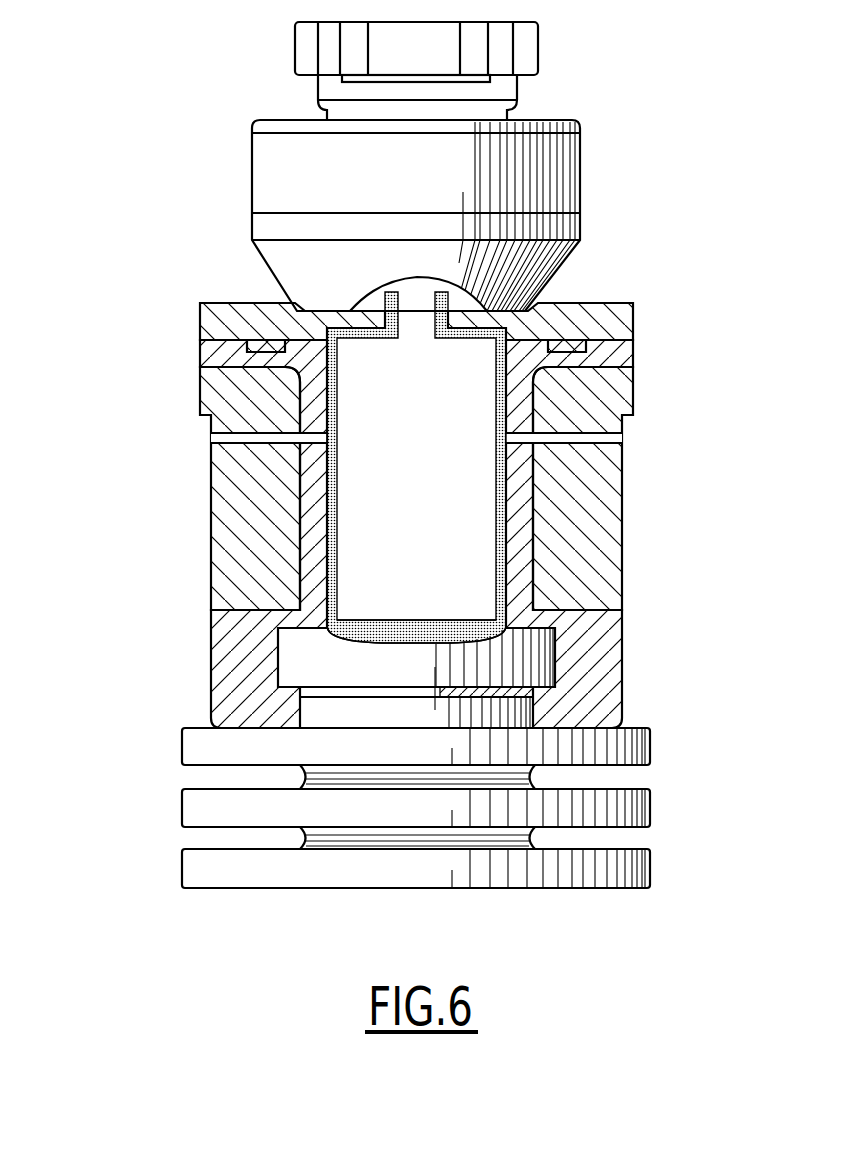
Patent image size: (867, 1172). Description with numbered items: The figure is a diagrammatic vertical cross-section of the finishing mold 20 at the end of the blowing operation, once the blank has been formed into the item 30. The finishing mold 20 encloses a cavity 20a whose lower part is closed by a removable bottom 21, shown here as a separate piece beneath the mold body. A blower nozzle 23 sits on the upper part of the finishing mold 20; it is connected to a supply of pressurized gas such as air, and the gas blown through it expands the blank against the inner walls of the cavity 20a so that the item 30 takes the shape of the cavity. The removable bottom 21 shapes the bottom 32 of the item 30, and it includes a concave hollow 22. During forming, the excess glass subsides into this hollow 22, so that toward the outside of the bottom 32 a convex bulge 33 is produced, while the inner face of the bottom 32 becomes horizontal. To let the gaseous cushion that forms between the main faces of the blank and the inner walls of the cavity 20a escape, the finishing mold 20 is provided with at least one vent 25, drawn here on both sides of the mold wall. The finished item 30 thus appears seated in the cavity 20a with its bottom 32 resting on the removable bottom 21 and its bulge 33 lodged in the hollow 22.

The finishing mold 20 is at (632, 517).
The cavity 20a is at (327, 570).
The removable bottom 21 is at (598, 747).
The concave hollow 22 is at (460, 643).
The blower nozzle 23 is at (558, 177).
The vent 25 is at (253, 437).
The item 30 is at (333, 497).
The bottom of the item 32 is at (423, 620).
The convex bulge 33 is at (360, 637).